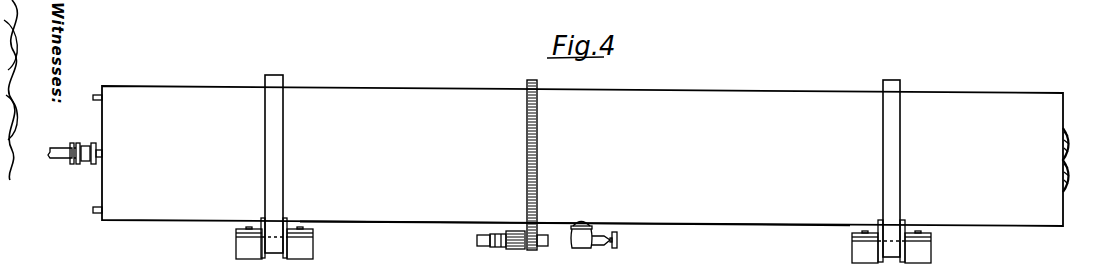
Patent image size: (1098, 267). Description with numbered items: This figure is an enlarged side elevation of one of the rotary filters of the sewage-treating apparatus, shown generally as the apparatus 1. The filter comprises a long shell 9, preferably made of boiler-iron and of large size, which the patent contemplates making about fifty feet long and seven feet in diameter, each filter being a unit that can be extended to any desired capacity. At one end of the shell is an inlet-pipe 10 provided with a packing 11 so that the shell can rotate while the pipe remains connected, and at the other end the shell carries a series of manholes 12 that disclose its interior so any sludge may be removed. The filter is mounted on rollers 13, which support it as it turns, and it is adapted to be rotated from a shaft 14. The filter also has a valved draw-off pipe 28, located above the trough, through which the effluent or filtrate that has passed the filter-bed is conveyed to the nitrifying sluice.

The rotary drum 1 is at (413, 79).
The shell 9 is at (575, 184).
The inlet-pipe 10 is at (63, 159).
The packing 11 is at (84, 167).
The manholes 12 is at (1072, 158).
The rollers 13 is at (276, 228).
The shaft 14 is at (503, 258).
The valved draw-off pipe 28 is at (594, 244).